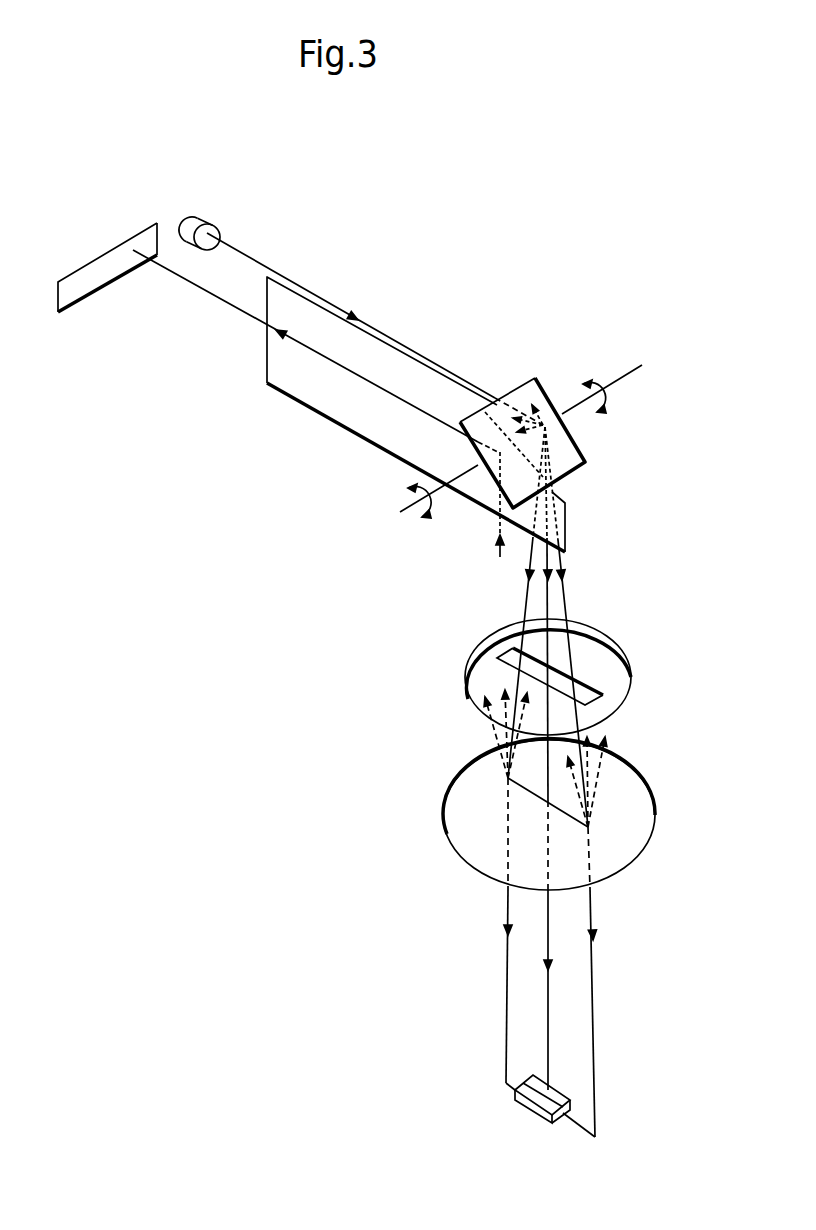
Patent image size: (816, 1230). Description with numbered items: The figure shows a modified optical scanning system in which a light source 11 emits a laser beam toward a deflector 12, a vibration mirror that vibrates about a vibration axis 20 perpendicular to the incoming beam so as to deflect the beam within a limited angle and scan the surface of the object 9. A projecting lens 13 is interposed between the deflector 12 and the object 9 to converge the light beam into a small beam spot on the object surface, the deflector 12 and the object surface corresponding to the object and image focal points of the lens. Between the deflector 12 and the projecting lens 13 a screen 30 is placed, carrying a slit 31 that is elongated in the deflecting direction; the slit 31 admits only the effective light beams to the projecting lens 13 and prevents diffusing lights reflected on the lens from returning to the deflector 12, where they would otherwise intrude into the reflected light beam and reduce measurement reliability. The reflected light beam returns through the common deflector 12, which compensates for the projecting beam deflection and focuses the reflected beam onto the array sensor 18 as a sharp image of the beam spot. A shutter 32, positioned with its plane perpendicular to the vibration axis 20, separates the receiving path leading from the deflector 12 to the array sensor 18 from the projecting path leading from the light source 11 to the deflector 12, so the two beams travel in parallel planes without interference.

The object 9 is at (542, 1118).
The light source 11 is at (197, 210).
The deflector 12 is at (587, 463).
The projecting lens 13 is at (635, 845).
The array sensor 18 is at (118, 245).
The vibration axis 20 is at (622, 382).
The screen 30 is at (608, 647).
The slit 31 is at (597, 693).
The shutter 32 is at (290, 392).